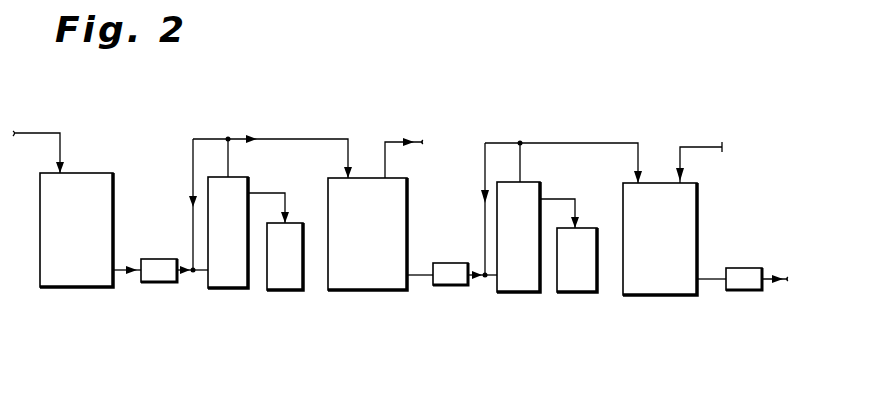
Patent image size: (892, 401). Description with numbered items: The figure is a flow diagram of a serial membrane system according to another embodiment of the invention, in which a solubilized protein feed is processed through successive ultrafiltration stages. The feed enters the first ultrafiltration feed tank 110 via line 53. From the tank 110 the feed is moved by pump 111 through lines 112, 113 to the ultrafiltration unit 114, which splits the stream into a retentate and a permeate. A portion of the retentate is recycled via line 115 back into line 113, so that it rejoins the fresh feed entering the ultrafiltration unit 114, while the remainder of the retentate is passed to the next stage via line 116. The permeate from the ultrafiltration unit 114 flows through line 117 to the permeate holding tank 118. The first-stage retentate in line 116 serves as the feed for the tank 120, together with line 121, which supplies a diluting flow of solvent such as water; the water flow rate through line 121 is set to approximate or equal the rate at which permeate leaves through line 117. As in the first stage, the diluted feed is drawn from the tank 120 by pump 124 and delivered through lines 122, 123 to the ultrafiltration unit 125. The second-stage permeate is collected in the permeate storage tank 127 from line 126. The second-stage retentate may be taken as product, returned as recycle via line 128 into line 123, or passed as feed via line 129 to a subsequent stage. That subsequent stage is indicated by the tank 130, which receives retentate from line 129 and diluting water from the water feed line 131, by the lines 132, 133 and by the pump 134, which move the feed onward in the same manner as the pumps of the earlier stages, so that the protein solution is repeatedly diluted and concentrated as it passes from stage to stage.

The line 53 is at (40, 133).
The first ultrafiltration feed tank 110 is at (97, 187).
The pump 111 is at (152, 283).
The line 112 is at (119, 272).
The line 113 is at (181, 273).
The ultrafiltration unit 114 is at (220, 282).
The line 115 is at (193, 139).
The line 116 is at (292, 139).
The line 117 is at (270, 193).
The permeate holding tank 118 is at (278, 280).
The tank 120 is at (357, 279).
The line 121 is at (415, 142).
The line 122 is at (418, 278).
The line 123 is at (470, 283).
The pump 124 is at (447, 285).
The ultrafiltration unit 125 is at (513, 288).
The line 126 is at (565, 199).
The permeate storage tank 127 is at (572, 290).
The line 128 is at (485, 143).
The line 129 is at (585, 143).
The tank 130 is at (643, 285).
The water feed line 131 is at (707, 147).
The line 132 is at (708, 282).
The line 133 is at (768, 282).
The pump 134 is at (735, 290).